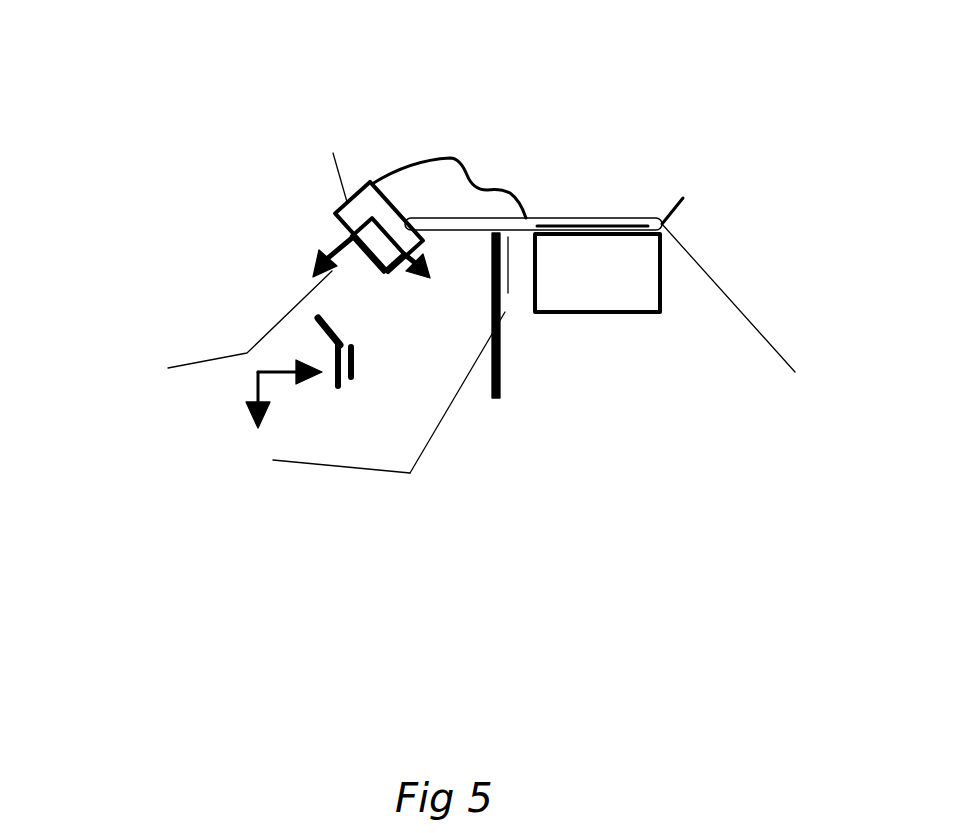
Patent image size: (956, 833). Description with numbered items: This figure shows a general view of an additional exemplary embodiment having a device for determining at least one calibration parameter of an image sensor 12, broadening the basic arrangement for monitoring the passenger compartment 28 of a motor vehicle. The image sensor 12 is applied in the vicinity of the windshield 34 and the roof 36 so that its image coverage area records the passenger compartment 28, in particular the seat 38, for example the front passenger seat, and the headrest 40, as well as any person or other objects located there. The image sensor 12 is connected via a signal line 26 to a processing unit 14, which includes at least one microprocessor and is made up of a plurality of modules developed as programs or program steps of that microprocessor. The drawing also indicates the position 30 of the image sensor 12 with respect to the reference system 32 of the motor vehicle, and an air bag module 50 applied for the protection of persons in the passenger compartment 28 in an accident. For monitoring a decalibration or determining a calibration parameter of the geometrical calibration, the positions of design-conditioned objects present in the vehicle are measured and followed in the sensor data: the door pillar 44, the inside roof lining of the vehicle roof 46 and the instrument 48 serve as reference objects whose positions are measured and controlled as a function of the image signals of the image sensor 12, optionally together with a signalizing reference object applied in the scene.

The image sensor 12 is at (370, 204).
The processing unit 14 is at (602, 250).
The signal line 26 is at (447, 158).
The passenger compartment 28 is at (565, 453).
The position 30 is at (317, 253).
The reference system 32 is at (275, 385).
The windshield 34 is at (283, 316).
The roof 36 is at (563, 217).
The seat 38 is at (410, 473).
The headrest 40 is at (508, 267).
The door pillar 44 is at (491, 400).
The inside roof lining of the vehicle roof 46 is at (598, 224).
The instrument 48 is at (328, 333).
The air bag module 50 is at (345, 358).